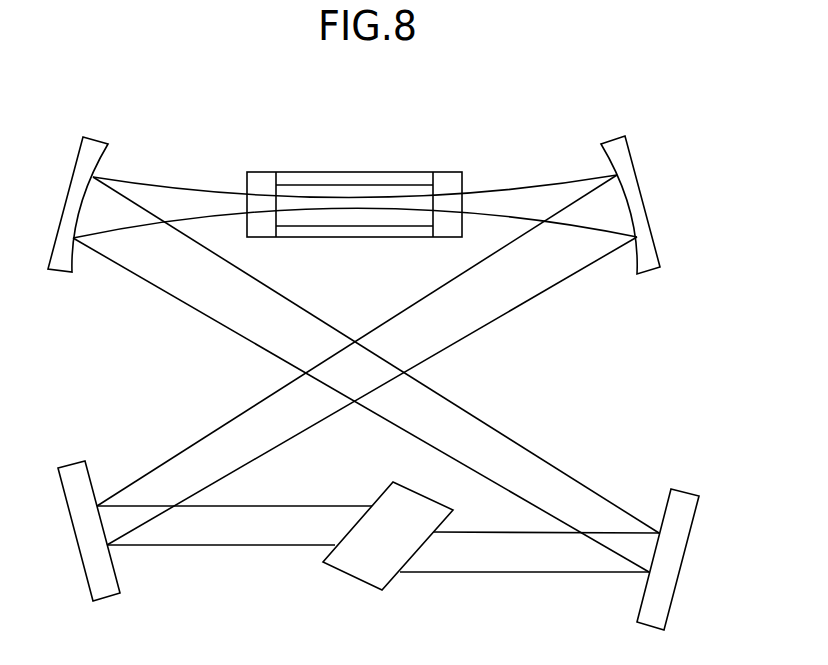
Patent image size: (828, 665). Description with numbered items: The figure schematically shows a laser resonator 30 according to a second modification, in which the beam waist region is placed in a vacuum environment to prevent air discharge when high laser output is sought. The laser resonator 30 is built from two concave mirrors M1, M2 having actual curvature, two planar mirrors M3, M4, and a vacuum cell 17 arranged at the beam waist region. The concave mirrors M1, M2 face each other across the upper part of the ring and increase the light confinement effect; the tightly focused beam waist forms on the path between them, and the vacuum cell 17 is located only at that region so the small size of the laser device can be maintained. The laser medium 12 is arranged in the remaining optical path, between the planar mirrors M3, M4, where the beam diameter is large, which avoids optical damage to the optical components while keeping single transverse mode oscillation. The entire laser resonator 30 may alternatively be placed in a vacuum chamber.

The laser resonator 30 is at (363, 110).
The vacuum cell 17 is at (383, 172).
The laser medium 12 is at (390, 483).
The concave mirror M1 is at (650, 272).
The concave mirror M2 is at (62, 275).
The planar mirror M3 is at (685, 488).
The planar mirror M4 is at (72, 462).